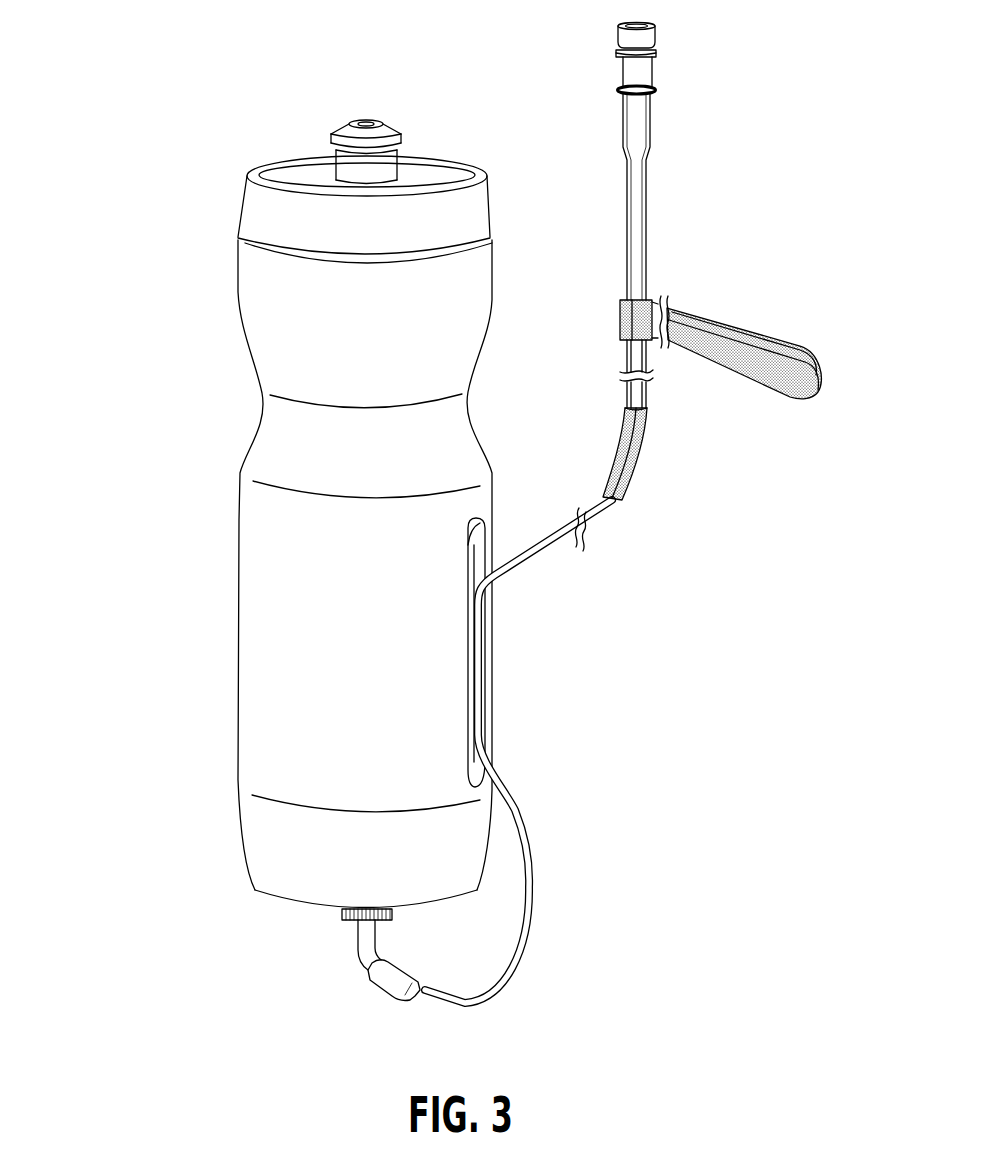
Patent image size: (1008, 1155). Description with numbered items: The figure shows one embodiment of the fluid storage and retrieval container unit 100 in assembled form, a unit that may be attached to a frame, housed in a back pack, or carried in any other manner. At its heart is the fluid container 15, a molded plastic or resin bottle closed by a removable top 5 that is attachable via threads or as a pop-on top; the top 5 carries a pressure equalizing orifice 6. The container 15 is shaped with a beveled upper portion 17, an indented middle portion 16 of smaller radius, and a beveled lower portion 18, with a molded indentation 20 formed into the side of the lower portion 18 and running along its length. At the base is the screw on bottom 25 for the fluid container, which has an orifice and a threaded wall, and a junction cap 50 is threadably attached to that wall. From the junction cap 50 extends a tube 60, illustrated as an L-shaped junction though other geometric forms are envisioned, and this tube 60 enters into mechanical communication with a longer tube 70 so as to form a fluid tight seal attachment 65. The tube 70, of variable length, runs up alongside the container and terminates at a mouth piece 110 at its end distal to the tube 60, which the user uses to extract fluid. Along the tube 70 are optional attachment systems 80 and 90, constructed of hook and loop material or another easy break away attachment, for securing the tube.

The fluid storage and retrieval container unit 100 is at (130, 77).
The removable top 5 is at (483, 215).
The pressure equalizing orifice 6 is at (385, 130).
The fluid container 15 is at (197, 570).
The indented middle portion 16 is at (263, 395).
The beveled upper portion 17 is at (250, 268).
The beveled lower portion 18 is at (253, 670).
The molded indentation 20 is at (486, 643).
The screw on bottom 25 is at (215, 853).
The junction cap 50 is at (345, 912).
The tube 60 is at (365, 950).
The fluid tight seal attachment 65 is at (387, 980).
The tube 70 is at (522, 810).
The attachment system 80 is at (637, 463).
The attachment system 90 is at (815, 382).
The mouth piece 110 is at (645, 75).